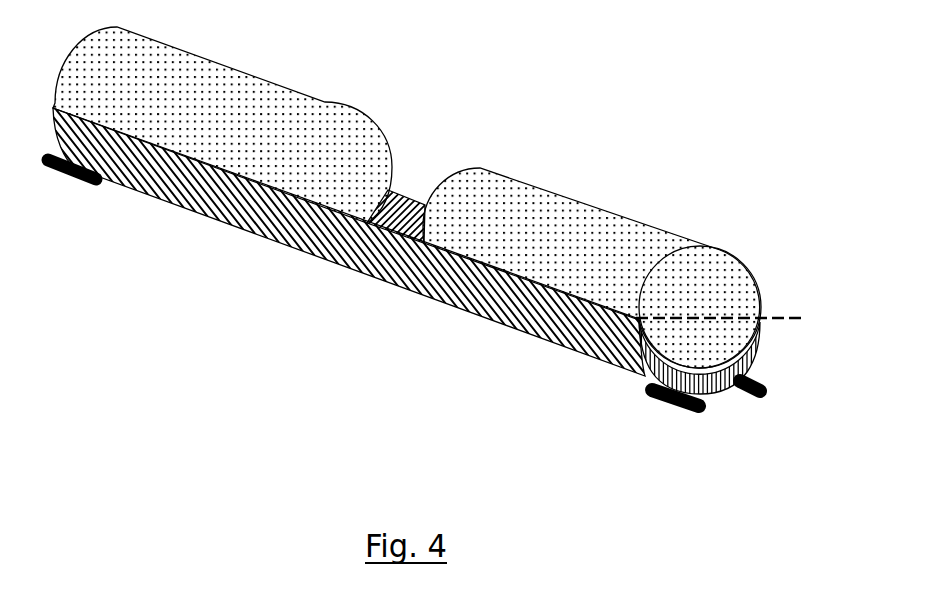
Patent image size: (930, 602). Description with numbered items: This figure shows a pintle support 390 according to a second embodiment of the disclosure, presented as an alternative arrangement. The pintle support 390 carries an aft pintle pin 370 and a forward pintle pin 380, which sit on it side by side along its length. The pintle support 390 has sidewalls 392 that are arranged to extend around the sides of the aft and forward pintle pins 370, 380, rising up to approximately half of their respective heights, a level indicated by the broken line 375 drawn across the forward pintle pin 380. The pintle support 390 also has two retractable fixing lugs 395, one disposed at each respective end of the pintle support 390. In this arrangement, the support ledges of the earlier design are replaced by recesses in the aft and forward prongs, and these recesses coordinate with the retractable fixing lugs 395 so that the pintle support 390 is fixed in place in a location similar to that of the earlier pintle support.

The aft pintle pin 370 is at (238, 132).
The forward pintle pin 380 is at (593, 255).
The sidewalls 392 is at (407, 190).
The broken line 375 is at (790, 318).
The pintle support 390 is at (263, 252).
The retractable fixing lugs 395 is at (65, 183).